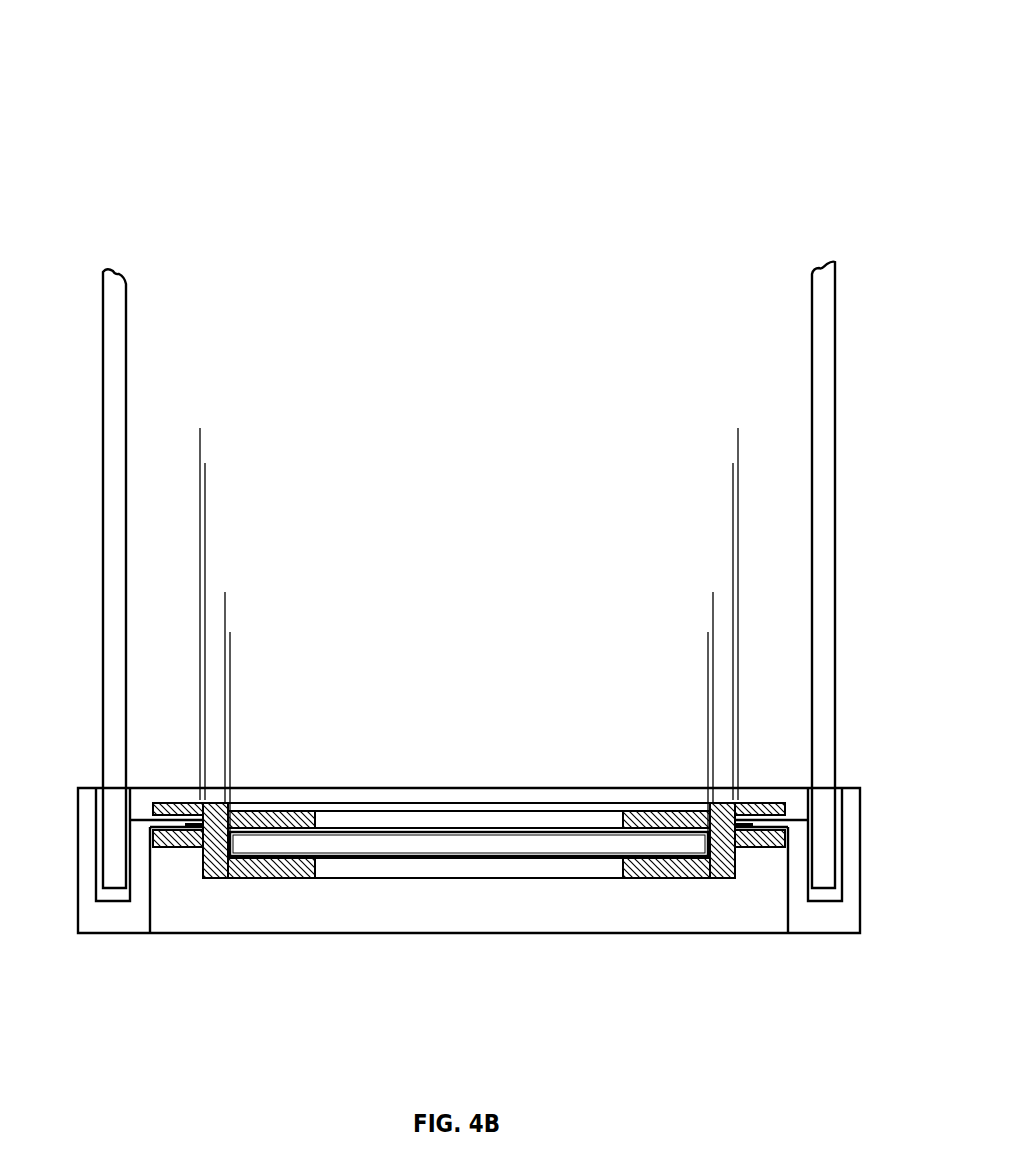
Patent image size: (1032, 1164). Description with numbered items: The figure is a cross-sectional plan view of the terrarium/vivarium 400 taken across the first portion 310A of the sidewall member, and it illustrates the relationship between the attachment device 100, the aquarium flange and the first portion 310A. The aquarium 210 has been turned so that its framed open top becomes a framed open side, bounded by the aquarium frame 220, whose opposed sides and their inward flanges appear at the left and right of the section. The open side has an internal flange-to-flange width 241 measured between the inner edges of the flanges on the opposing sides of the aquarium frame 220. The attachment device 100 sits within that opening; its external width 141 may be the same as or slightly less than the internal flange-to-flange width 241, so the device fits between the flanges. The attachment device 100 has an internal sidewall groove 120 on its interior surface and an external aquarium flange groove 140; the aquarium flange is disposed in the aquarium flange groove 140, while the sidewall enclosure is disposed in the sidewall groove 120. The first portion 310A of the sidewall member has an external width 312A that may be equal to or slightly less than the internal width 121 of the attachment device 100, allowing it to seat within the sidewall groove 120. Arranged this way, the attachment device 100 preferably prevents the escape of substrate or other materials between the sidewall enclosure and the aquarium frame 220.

The terrarium/vivarium 400 is at (852, 51).
The aquarium frame 220 is at (77, 918).
The aquarium 210 is at (100, 692).
The aquarium flange groove 140 is at (174, 834).
The sidewall groove 120 is at (278, 863).
The attachment device 100 is at (293, 879).
The first portion of sidewall member 310A is at (482, 851).
The internal flange-to-flange width 241 is at (726, 443).
The external width of attachment device 141 is at (721, 482).
The internal width of attachment device 121 is at (701, 613).
The external width of first portion 312A is at (696, 658).